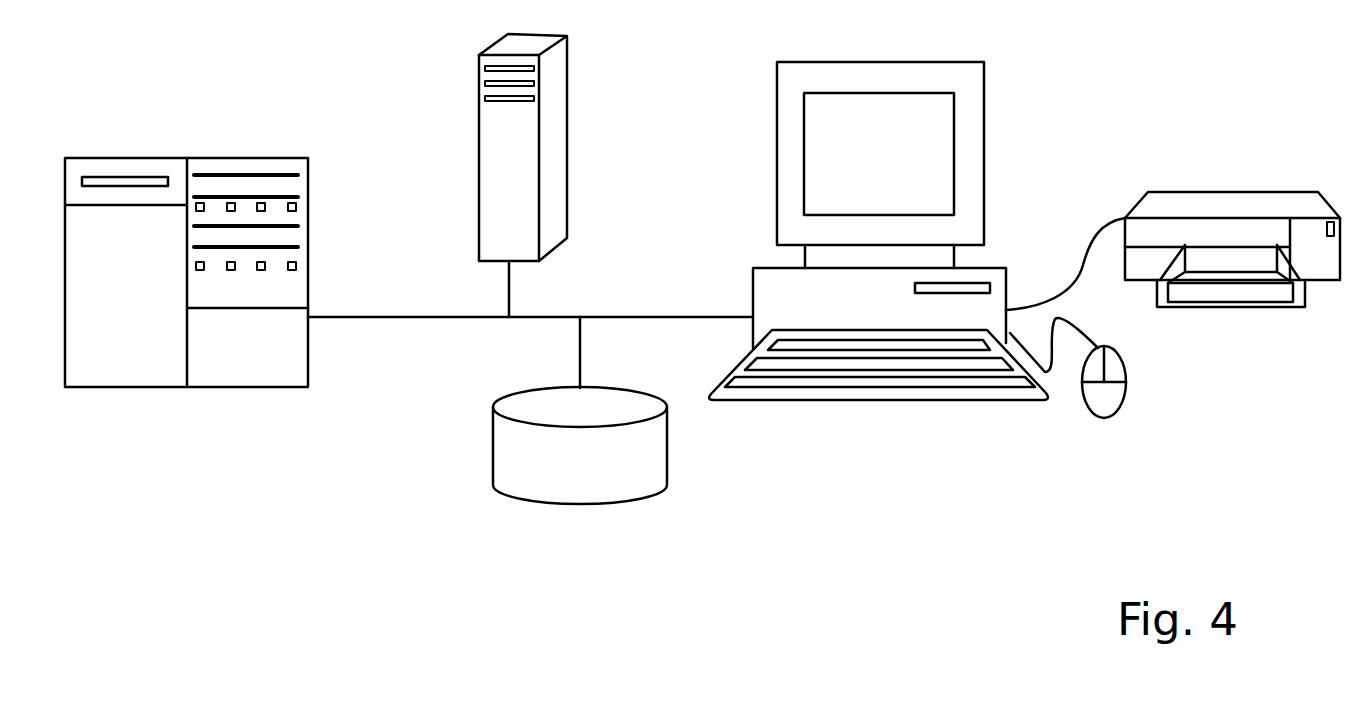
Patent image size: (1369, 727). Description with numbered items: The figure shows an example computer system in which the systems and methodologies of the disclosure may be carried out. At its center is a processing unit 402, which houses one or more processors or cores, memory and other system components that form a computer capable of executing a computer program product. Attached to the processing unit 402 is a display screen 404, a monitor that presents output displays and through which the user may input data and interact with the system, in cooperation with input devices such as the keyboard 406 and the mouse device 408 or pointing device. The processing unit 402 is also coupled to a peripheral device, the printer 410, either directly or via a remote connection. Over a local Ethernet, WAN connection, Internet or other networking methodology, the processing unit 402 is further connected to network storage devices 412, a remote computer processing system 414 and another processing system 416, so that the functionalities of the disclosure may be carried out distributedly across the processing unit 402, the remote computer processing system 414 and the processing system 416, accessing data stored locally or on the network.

The processing unit 402 is at (758, 295).
The display screen 404 is at (985, 173).
The keyboard 406 is at (947, 400).
The mouse device 408 is at (1127, 400).
The printer 410 is at (1232, 190).
The network storage devices 412 is at (605, 500).
The remote computer processing system 414 is at (568, 133).
The processing system 416 is at (241, 158).